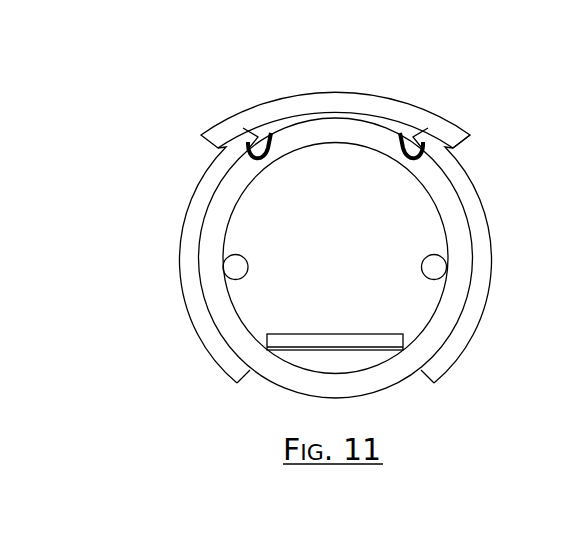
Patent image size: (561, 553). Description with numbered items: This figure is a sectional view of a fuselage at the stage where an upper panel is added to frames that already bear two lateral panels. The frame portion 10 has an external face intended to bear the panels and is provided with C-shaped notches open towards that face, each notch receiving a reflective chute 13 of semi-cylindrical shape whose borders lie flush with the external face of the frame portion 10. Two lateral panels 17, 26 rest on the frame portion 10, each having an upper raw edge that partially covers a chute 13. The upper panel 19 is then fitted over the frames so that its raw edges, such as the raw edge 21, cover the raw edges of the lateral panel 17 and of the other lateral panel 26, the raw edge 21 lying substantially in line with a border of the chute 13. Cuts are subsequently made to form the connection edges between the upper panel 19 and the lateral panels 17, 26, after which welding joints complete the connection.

The frame portion 10 is at (437, 188).
The reflective chute 13 is at (398, 160).
The lateral panel 17 is at (463, 177).
The upper panel 19 is at (341, 102).
The raw edge 21 is at (460, 141).
The lateral panel 26 is at (203, 175).